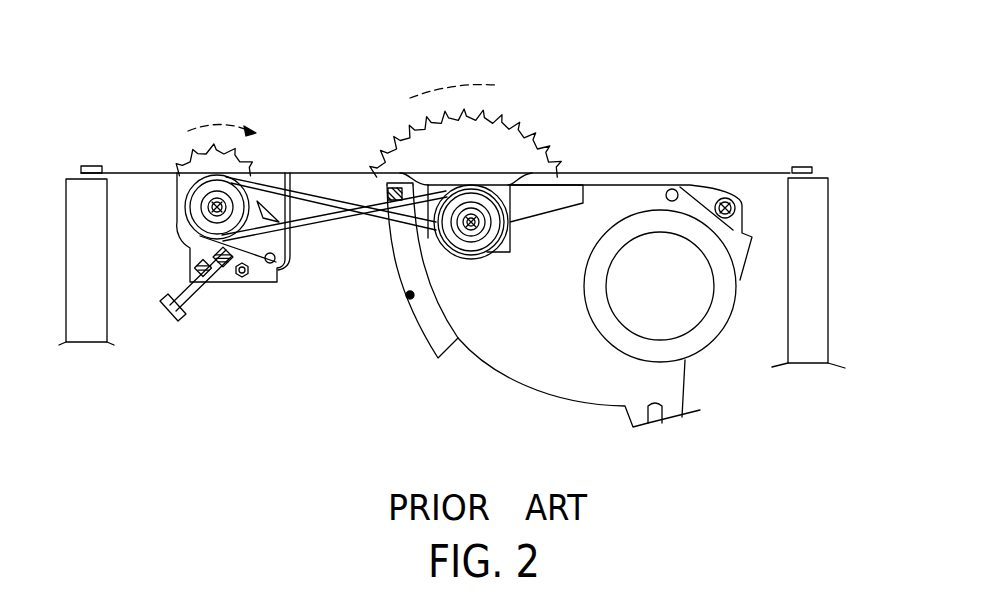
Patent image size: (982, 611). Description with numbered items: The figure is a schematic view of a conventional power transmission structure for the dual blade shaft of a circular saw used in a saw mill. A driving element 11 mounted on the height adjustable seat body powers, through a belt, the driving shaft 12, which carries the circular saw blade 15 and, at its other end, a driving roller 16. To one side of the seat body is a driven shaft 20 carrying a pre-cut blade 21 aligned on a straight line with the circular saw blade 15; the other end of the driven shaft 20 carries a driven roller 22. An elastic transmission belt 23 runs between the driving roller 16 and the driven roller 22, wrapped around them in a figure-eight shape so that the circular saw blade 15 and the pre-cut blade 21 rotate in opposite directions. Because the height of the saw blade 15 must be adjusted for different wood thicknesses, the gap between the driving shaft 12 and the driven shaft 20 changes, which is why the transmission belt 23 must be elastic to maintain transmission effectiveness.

The driving element 11 is at (685, 307).
The driving shaft 12 is at (480, 233).
The circular saw blade 15 is at (532, 128).
The driving roller 16 is at (422, 257).
The driven shaft 20 is at (207, 219).
The pre-cut blade 21 is at (195, 148).
The driven roller 22 is at (175, 192).
The elastic transmission belt 23 is at (298, 200).